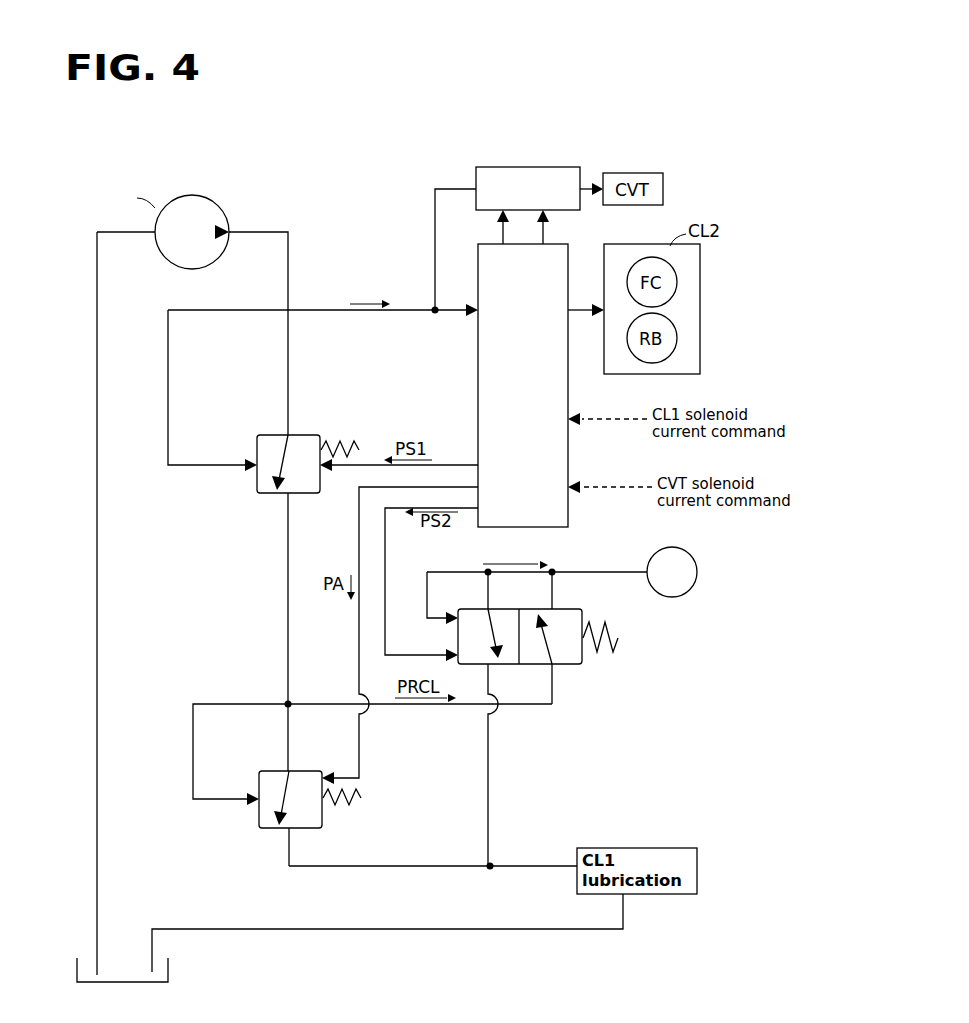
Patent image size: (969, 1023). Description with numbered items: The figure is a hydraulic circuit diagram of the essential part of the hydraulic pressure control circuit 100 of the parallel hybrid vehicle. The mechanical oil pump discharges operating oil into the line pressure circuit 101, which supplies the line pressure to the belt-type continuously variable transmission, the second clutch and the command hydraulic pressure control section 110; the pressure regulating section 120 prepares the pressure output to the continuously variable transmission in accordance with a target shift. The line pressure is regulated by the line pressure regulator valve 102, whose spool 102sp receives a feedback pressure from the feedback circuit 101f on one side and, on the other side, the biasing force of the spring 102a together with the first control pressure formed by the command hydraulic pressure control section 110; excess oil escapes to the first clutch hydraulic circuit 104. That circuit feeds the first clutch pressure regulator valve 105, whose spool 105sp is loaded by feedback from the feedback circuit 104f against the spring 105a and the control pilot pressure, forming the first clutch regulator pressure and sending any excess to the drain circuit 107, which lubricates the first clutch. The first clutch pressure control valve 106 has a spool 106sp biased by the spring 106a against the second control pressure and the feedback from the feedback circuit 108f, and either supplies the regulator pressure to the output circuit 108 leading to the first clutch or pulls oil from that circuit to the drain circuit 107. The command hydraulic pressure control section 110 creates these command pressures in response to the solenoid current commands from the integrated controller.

The hydraulic pressure control circuit 100 is at (345, 210).
The line pressure circuit 101 is at (291, 268).
The feedback circuit 101f is at (168, 355).
The line pressure regulator valve 102 is at (305, 431).
The spool 102sp is at (270, 434).
The spring 102a is at (346, 440).
The first clutch hydraulic circuit 104 is at (286, 524).
The feedback circuit 104f is at (193, 739).
The first clutch pressure regulator valve 105 is at (326, 795).
The spool 105sp is at (267, 772).
The spring 105a is at (363, 797).
The first clutch pressure control valve 106 is at (562, 722).
The spool 106sp is at (546, 615).
The spring 106a is at (610, 656).
The drain circuit 107 is at (433, 868).
The output circuit 108 is at (580, 571).
The feedback circuit 108f is at (427, 608).
The command hydraulic pressure control section 110 is at (567, 247).
The pressure regulating section 120 is at (563, 170).